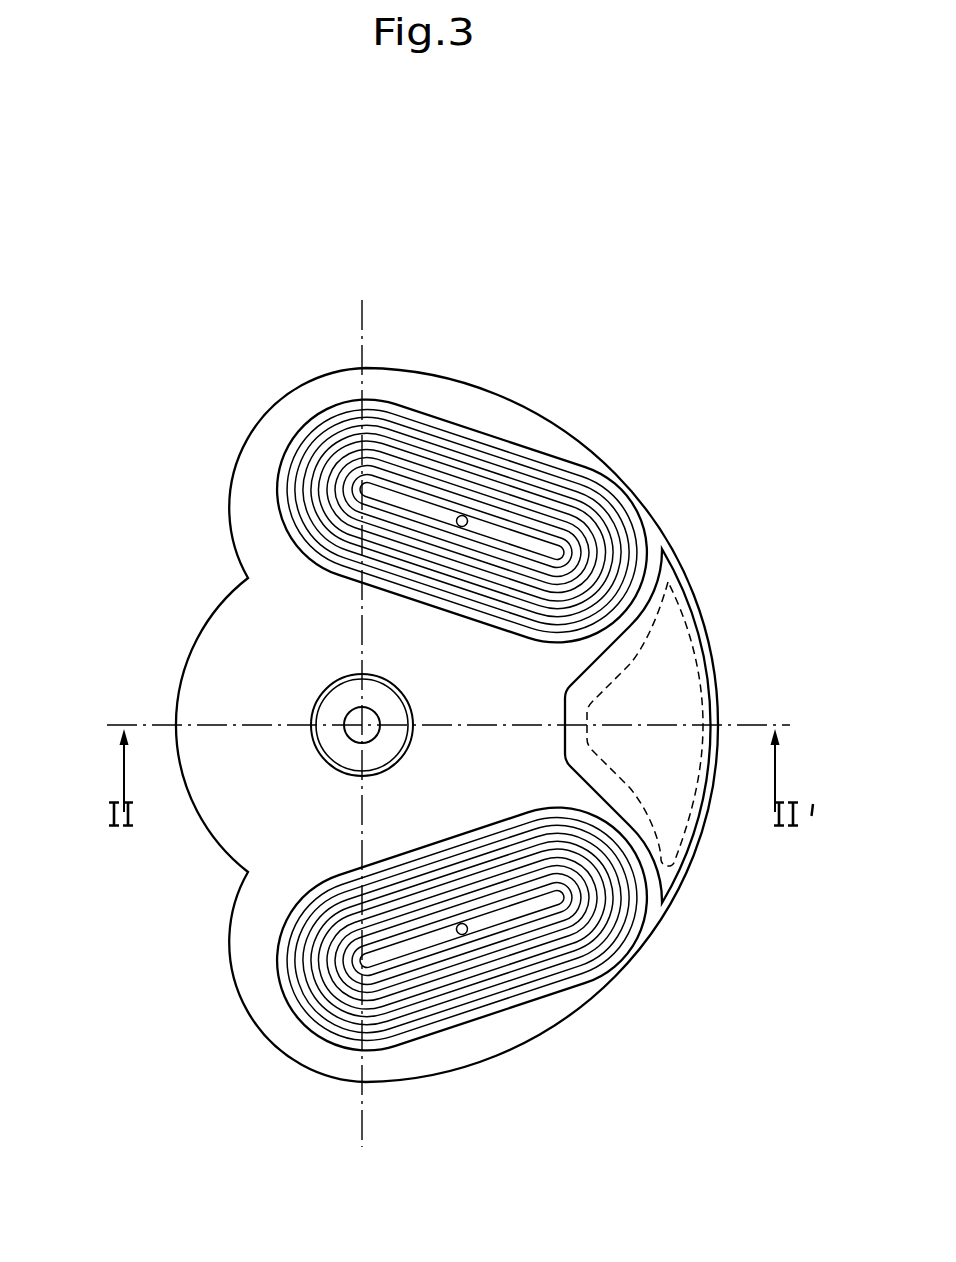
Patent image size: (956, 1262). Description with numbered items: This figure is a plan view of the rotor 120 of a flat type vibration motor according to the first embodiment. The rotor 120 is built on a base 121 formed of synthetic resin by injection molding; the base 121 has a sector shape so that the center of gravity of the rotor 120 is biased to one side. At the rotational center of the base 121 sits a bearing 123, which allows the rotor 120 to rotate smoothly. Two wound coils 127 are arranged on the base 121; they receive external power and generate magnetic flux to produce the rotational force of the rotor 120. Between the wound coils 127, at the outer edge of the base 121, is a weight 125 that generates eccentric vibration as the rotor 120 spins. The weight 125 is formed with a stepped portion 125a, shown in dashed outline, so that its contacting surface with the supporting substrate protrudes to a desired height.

The rotor 120 is at (182, 350).
The base 121 is at (272, 560).
The bearing 123 is at (338, 742).
The weight 125 is at (673, 803).
The stepped portion 125a is at (704, 637).
The wound coil 127 is at (578, 488).